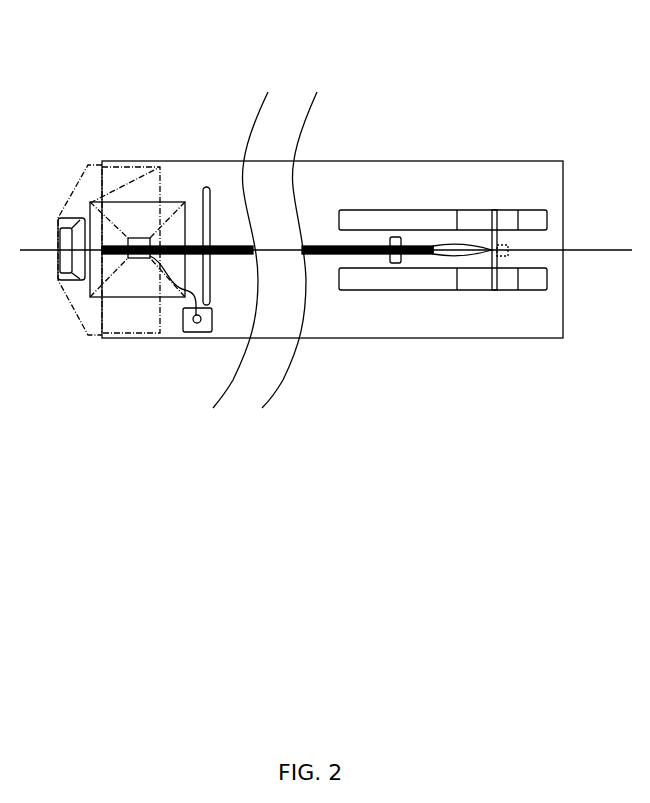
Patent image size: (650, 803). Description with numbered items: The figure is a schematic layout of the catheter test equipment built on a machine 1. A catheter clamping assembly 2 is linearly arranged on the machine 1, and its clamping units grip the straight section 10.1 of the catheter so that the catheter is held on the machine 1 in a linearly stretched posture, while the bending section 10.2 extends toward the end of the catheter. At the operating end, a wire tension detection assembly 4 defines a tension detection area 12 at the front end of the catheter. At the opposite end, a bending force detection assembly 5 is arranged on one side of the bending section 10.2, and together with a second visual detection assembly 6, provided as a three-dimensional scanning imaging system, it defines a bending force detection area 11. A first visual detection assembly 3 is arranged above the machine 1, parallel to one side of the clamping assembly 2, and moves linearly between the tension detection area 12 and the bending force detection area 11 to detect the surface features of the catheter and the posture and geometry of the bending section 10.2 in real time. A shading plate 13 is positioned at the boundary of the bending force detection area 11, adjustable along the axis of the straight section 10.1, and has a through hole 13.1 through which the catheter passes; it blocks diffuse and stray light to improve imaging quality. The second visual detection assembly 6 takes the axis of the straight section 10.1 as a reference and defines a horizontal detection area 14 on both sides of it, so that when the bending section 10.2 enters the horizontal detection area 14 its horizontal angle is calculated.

The machine 1 is at (433, 166).
The catheter clamping assembly 2 is at (398, 265).
The first visual detection assembly 3 is at (137, 236).
The wire tension detection assembly 4 is at (497, 229).
The bending force detection assembly 5 is at (183, 321).
The second visual detection assembly 6 is at (63, 218).
The straight section 10.1 is at (321, 244).
The bending section 10.2 is at (161, 247).
The bending force detection area 11 is at (138, 285).
The tension detection area 12 is at (506, 270).
The shading plate 13 is at (212, 307).
The through hole 13.1 is at (211, 255).
The horizontal detection area 14 is at (92, 275).